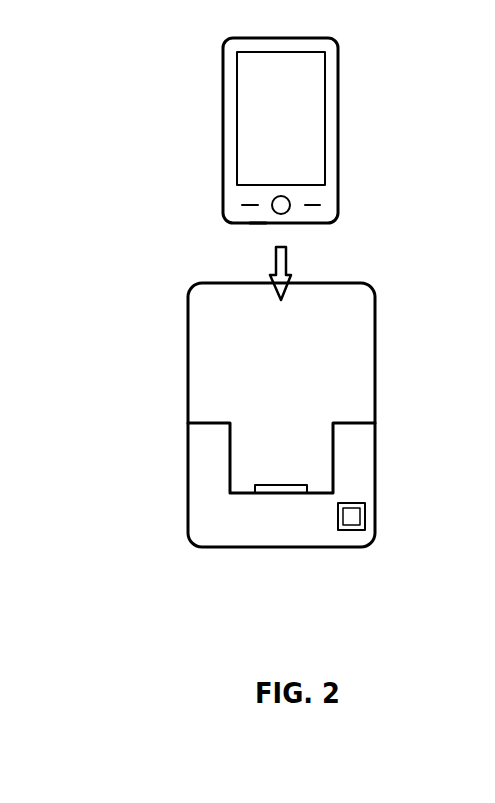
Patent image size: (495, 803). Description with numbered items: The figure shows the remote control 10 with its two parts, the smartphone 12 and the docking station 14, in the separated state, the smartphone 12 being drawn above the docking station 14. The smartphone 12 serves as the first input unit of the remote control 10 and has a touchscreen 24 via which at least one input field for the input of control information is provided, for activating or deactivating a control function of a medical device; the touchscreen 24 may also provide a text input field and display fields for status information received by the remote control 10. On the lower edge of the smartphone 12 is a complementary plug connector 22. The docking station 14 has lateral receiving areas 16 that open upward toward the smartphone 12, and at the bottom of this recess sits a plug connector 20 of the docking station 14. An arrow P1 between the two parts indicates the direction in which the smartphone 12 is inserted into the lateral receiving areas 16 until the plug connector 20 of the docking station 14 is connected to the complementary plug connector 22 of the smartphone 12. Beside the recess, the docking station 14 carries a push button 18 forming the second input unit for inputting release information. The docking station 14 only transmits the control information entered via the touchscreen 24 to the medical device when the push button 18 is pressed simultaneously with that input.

The remote control 10 is at (113, 170).
The smartphone 12 is at (333, 109).
The touchscreen 24 is at (293, 145).
The complementary plug connector 22 is at (258, 224).
The arrow P1 is at (286, 257).
The docking station 14 is at (375, 363).
The lateral receiving areas 16 is at (332, 438).
The plug connector 20 is at (292, 487).
The push button 18 is at (363, 512).